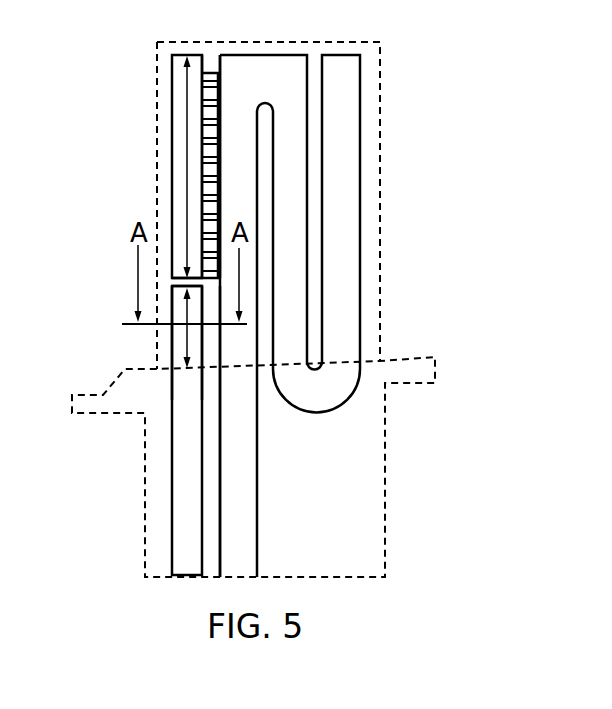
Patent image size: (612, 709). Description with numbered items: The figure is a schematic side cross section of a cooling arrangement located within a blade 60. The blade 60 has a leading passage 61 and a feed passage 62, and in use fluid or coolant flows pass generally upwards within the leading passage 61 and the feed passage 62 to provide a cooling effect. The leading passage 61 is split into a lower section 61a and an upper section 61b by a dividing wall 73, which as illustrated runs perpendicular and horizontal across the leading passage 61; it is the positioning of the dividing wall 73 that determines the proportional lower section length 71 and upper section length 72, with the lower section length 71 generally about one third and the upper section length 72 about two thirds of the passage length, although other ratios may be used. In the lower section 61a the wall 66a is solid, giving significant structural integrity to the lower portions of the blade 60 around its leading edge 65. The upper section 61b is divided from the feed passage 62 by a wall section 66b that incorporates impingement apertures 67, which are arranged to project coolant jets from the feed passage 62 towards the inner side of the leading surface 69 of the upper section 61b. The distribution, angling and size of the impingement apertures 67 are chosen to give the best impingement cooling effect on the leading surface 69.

The blade 60 is at (353, 500).
The leading passage 61 is at (180, 407).
The lower section 61a is at (186, 352).
The upper section 61b is at (173, 135).
The feed passage 62 is at (240, 179).
The leading edge 65 is at (157, 162).
The wall 66a is at (210, 348).
The wall section 66b is at (210, 65).
The impingement apertures 67 is at (218, 117).
The leading surface 69 is at (178, 92).
The lower section length 71 is at (188, 320).
The upper section length 72 is at (185, 203).
The dividing wall 73 is at (182, 277).